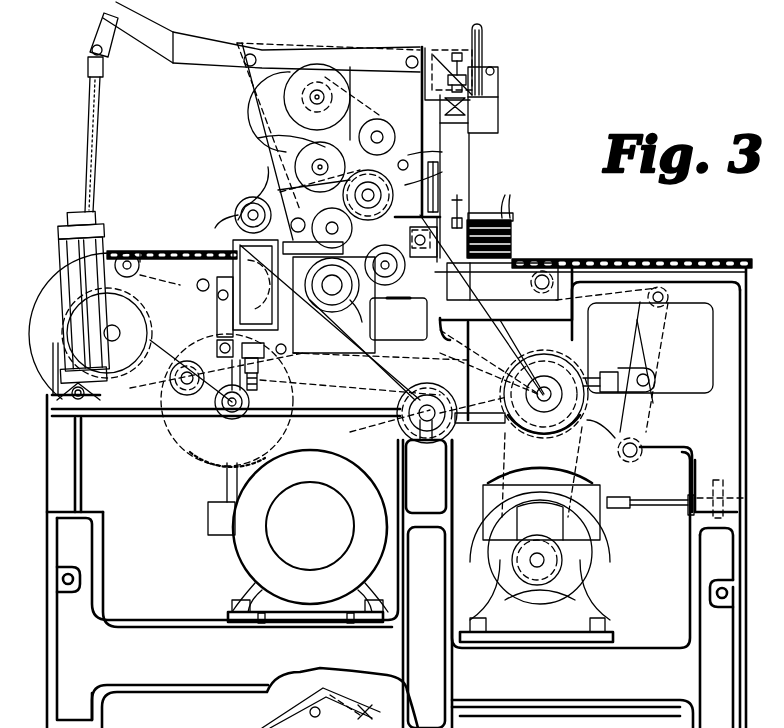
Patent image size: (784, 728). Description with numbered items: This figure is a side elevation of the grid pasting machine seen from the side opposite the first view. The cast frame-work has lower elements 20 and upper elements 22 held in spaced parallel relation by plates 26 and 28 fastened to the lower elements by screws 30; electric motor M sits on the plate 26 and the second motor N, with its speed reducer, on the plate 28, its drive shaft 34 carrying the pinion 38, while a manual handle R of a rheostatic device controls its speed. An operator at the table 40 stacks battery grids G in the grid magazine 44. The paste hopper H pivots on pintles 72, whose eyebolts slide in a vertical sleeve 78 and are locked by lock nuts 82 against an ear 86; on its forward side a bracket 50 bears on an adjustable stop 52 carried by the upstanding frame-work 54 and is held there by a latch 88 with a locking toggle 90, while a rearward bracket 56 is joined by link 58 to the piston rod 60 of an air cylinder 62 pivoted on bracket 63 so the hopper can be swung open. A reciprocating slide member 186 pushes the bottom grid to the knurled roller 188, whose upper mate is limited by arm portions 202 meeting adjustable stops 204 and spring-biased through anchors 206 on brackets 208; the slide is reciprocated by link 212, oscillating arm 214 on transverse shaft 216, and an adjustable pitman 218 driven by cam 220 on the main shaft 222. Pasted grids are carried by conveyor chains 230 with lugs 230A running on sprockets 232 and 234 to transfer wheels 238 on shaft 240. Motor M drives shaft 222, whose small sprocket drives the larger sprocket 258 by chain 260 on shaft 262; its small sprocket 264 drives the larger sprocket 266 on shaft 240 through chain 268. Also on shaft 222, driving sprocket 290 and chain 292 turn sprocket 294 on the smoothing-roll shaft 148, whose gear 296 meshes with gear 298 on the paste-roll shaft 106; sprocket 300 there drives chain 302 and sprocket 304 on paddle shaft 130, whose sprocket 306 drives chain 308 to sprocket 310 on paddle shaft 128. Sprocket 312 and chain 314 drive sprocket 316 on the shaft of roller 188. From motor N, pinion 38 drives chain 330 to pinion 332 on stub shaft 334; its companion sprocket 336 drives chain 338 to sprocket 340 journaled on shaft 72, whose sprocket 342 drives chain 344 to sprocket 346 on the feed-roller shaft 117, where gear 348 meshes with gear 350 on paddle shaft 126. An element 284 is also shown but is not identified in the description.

The lower elements 20 is at (612, 700).
The upper elements 22 is at (50, 446).
The first plate 26 is at (300, 622).
The second plate 28 is at (540, 644).
The screws 30 is at (262, 624).
The drive shaft 34 is at (530, 562).
The pinion 38 is at (548, 562).
The table 40 is at (695, 258).
The grid magazine 44 is at (514, 222).
The bracket 50 is at (438, 50).
The adjustable stop 52 is at (490, 116).
The frame-work 54 is at (471, 150).
The bracket 56 is at (226, 24).
The link 58 is at (100, 32).
The piston rod 60 is at (100, 110).
The air cylinder 62 is at (66, 248).
The bracket 63 is at (62, 396).
The pintles 72 is at (240, 226).
The vertical sleeve 78 is at (212, 272).
The lock nuts 82 is at (260, 378).
The ear 86 is at (224, 340).
The latch 88 is at (460, 52).
The locking toggle 90 is at (483, 36).
The shaft 106 is at (313, 248).
The transverse shaft 117 is at (380, 190).
The transverse shaft 126 is at (312, 167).
The transverse shaft 128 is at (382, 130).
The transverse shaft 130 is at (310, 93).
The shaft 148 is at (336, 300).
The reciprocating slide member 186 is at (530, 272).
The knurled roller 188 is at (432, 290).
The arm portions 202 is at (436, 239).
The adjustable stops 204 is at (490, 209).
The adjustable anchors 206 is at (435, 187).
The brackets 208 is at (422, 225).
The link 212 is at (606, 314).
The oscillating arm 214 is at (654, 356).
The transverse shaft 216 is at (640, 446).
The adjustable pitman 218 is at (616, 370).
The cam 220 is at (474, 364).
The main driving shaft 222 is at (425, 447).
The conveyor chains 230 is at (200, 246).
The lugs 230A is at (150, 252).
The idler sprockets 232 is at (140, 283).
The sprocket 234 is at (247, 288).
The transfer wheels 238 is at (42, 310).
The transverse shaft 240 is at (114, 342).
The larger sprocket 258 is at (205, 462).
The chain 260 is at (354, 450).
The transverse shaft 262 is at (230, 418).
The small sprocket 264 is at (250, 413).
The larger sprocket 266 is at (124, 372).
The chain 268 is at (163, 397).
The roller 284 is at (126, 252).
The driving sprocket 290 is at (460, 444).
The chain 292 is at (368, 390).
The sprocket 294 is at (328, 300).
The driven gear 296 is at (373, 294).
The gear 298 is at (310, 224).
The sprocket 300 is at (308, 232).
The chain 302 is at (266, 139).
The sprocket 304 is at (270, 100).
The sprocket 306 is at (335, 65).
The chain 308 is at (363, 91).
The sprocket 310 is at (370, 120).
The sprocket 312 is at (470, 352).
The chain 314 is at (386, 356).
The sprocket 316 is at (396, 270).
The chain 330 is at (575, 456).
The pinion 332 is at (565, 350).
The stub shaft 334 is at (552, 388).
The second sprocket 336 is at (548, 410).
The chain 338 is at (502, 346).
The sprocket 340 is at (240, 208).
The second sprocket 342 is at (252, 182).
The chain 344 is at (315, 181).
The sprocket 346 is at (380, 170).
The gear 348 is at (420, 178).
The second gear 350 is at (296, 158).
The grid plates G is at (507, 203).
The paste hopper H is at (262, 113).
The electric motor M is at (356, 462).
The second motor N is at (540, 468).
The manual handle R is at (740, 500).